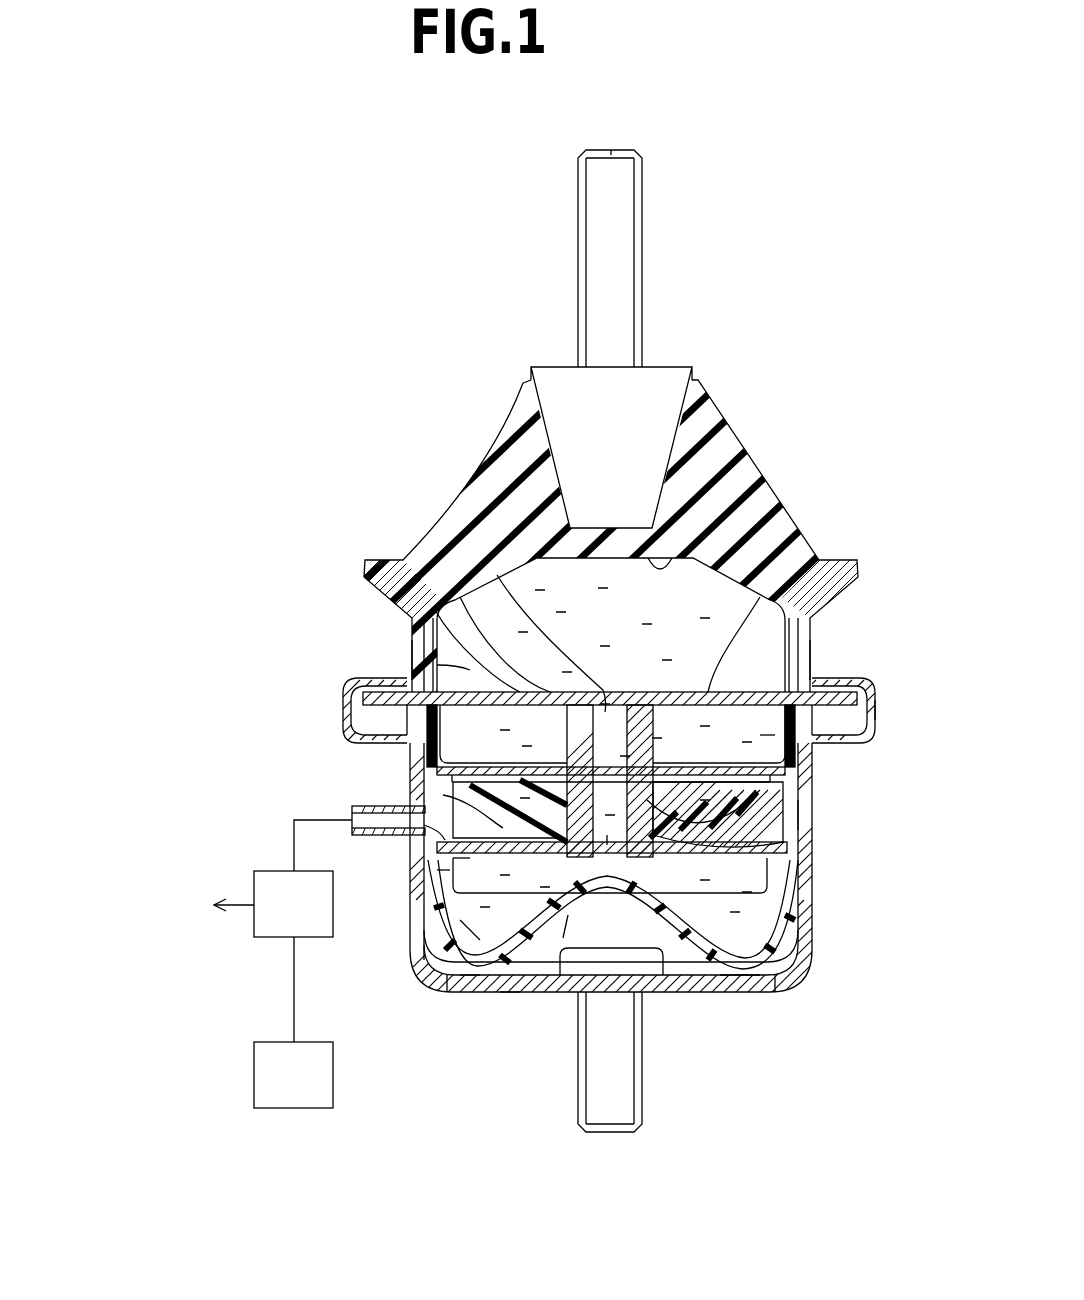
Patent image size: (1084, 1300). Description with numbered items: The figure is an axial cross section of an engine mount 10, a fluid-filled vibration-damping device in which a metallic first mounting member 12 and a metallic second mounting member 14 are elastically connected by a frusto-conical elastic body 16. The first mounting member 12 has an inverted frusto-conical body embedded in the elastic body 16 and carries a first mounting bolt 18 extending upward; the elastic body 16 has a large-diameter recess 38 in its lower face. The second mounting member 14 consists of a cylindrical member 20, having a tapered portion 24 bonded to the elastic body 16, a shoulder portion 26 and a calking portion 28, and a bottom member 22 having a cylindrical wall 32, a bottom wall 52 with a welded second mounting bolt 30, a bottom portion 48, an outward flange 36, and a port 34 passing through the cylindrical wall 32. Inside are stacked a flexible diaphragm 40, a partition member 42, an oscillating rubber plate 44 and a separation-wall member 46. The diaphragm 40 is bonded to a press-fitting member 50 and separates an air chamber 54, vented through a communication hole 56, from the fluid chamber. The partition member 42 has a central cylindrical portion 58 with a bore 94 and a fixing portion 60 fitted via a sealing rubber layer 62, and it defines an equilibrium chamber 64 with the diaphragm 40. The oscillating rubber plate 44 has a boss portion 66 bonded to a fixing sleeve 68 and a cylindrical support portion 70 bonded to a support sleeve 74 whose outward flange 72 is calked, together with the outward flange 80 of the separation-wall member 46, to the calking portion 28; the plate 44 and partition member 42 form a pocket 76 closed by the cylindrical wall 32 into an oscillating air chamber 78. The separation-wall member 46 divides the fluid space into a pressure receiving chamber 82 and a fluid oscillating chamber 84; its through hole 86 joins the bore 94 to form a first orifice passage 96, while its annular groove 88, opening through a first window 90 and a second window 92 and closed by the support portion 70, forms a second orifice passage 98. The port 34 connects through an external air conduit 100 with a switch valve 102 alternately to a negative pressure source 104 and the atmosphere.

The engine mount 10 is at (836, 222).
The first mounting member 12 is at (658, 356).
The second mounting member 14 is at (882, 680).
The elastic body 16 is at (712, 458).
The first mounting bolt 18 is at (622, 213).
The cylindrical member 20 is at (408, 648).
The bottom member 22 is at (818, 828).
The tapered portion 24 is at (392, 592).
The shoulder portion 26 is at (383, 686).
The calking portion 28 is at (350, 716).
The second mounting bolt 30 is at (625, 1080).
The cylindrical wall 32 is at (803, 935).
The port 34 is at (360, 806).
The outward flange 36 is at (850, 737).
The large-diameter recess 38 is at (707, 610).
The flexible diaphragm 40 is at (752, 965).
The partition member 42 is at (752, 830).
The oscillating rubber plate 44 is at (806, 810).
The separation-wall member 46 is at (747, 690).
The bottom portion 48 is at (530, 960).
The press-fitting member 50 is at (462, 866).
The bottom wall 52 is at (738, 985).
The air chamber 54 is at (735, 992).
The communication hole 56 is at (425, 955).
The cylindrical portion 58 is at (778, 888).
The fixing portion 60 is at (440, 876).
The sealing rubber layer 62 is at (808, 898).
The equilibrium chamber 64 is at (468, 975).
The boss portion 66 is at (590, 767).
The fixing sleeve 68 is at (437, 665).
The cylindrical support portion 70 is at (790, 790).
The outward flange 72 is at (832, 700).
The support sleeve 74 is at (420, 713).
The pocket 76 is at (440, 832).
The oscillating air chamber 78 is at (470, 930).
The outward flange 80 is at (816, 710).
The pressure receiving chamber 82 is at (790, 573).
The fluid oscillating chamber 84 is at (758, 802).
The through hole 86 is at (460, 597).
The annular groove 88 is at (470, 640).
The first window 90 is at (465, 597).
The second window 92 is at (760, 597).
The bore 94 is at (606, 835).
The first orifice passage 96 is at (563, 938).
The second orifice passage 98 is at (765, 740).
The external air conduit 100 is at (294, 850).
The switch valve 102 is at (268, 935).
The negative pressure source 104 is at (294, 1108).